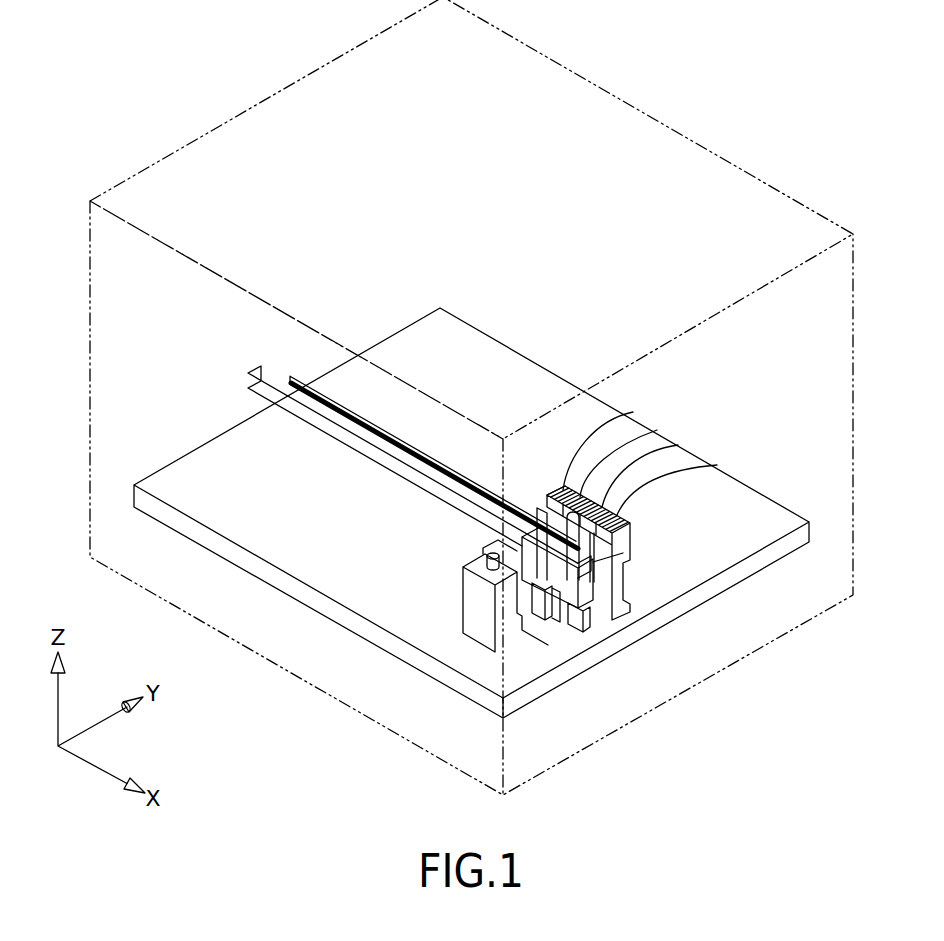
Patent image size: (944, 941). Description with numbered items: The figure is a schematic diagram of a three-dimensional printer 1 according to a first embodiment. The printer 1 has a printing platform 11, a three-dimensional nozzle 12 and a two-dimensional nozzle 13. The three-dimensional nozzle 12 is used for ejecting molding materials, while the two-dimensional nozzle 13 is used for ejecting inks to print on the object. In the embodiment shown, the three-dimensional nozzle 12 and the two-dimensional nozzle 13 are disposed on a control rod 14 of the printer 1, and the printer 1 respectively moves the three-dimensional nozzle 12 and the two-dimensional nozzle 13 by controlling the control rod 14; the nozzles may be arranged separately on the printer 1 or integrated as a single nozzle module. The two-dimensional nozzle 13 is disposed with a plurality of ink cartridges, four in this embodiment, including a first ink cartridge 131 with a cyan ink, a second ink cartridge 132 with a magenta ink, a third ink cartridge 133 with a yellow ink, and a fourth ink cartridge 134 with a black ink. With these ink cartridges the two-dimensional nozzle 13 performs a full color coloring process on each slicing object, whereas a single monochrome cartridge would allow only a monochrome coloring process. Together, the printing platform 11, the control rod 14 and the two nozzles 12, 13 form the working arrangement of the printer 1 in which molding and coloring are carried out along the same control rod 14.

The printer 1 is at (647, 89).
The printing platform 11 is at (732, 578).
The 3D nozzle 12 is at (513, 612).
The 2D nozzle 13 is at (661, 500).
The first ink cartridge 131 is at (633, 412).
The second ink cartridge 132 is at (657, 430).
The third ink cartridge 133 is at (678, 445).
The fourth ink cartridge 134 is at (691, 481).
The control rod 14 is at (378, 460).